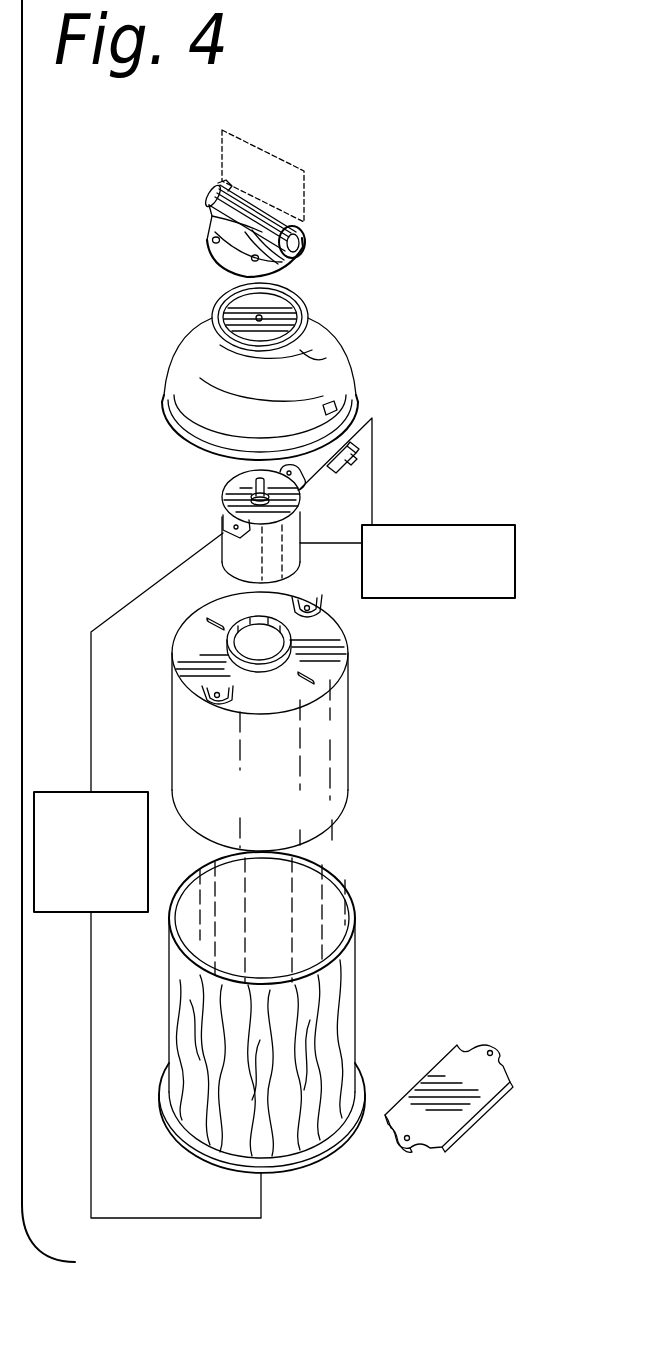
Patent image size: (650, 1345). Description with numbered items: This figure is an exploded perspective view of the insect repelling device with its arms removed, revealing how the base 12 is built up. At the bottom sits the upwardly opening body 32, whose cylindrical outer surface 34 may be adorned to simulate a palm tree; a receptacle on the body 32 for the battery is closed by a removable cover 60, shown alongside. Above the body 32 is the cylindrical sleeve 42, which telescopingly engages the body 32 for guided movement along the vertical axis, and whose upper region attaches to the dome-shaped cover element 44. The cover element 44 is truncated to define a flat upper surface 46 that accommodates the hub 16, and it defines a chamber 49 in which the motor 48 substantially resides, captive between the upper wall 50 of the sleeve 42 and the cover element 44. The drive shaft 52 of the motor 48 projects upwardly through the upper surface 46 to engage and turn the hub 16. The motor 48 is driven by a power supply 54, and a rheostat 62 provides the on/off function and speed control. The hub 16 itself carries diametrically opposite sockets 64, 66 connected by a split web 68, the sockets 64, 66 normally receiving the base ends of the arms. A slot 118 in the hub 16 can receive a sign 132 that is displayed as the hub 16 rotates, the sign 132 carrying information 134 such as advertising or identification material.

The base 12 is at (106, 523).
The hub 16 is at (303, 217).
The body 32 is at (354, 962).
The cylindrical outer surface 34 is at (354, 1018).
The cylindrical sleeve 42 is at (335, 725).
The dome-shaped cover element 44 is at (335, 385).
The flat upper surface 46 is at (278, 305).
The motor 48 is at (235, 557).
The chamber 49 is at (318, 350).
The upper wall 50 is at (325, 630).
The drive shaft 52 is at (256, 488).
The power supply 54 is at (104, 901).
The removable cover 60 is at (448, 1068).
The rheostat 62 is at (450, 592).
The socket 64 is at (296, 248).
The socket 66 is at (216, 217).
The split web 68 is at (284, 214).
The slot 118 is at (226, 186).
The sign 132 is at (242, 130).
The information 134 is at (271, 162).